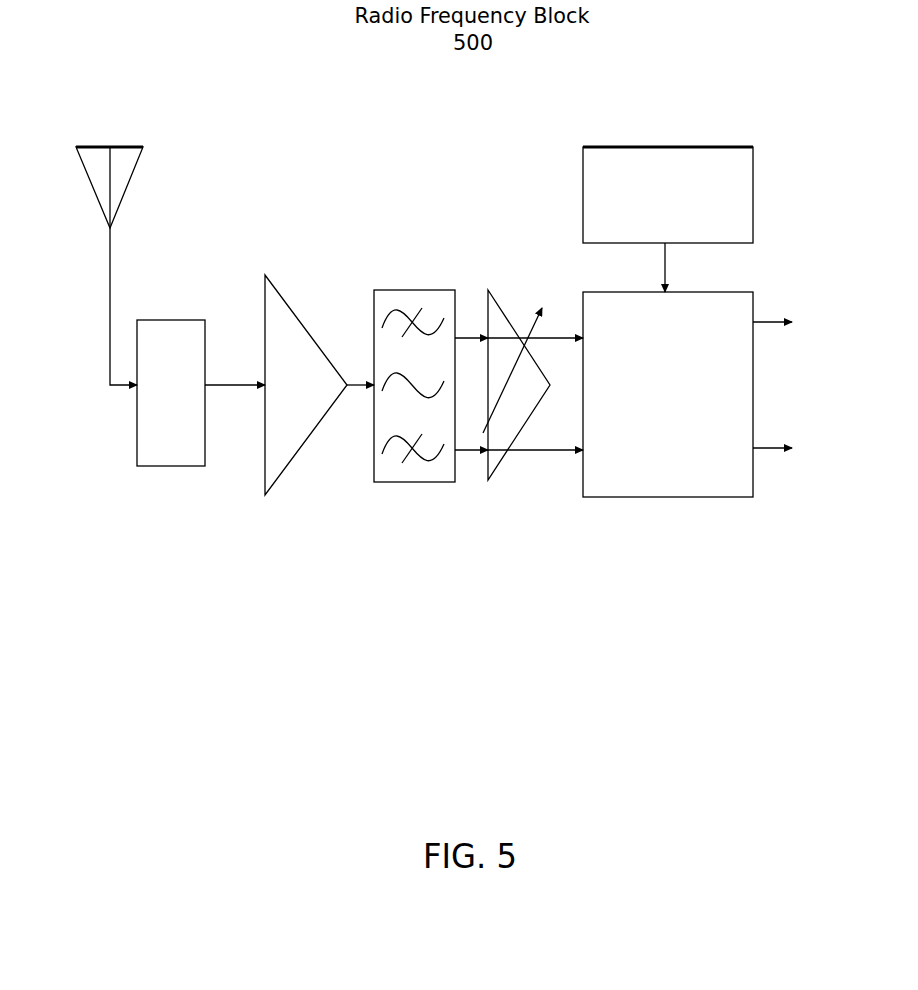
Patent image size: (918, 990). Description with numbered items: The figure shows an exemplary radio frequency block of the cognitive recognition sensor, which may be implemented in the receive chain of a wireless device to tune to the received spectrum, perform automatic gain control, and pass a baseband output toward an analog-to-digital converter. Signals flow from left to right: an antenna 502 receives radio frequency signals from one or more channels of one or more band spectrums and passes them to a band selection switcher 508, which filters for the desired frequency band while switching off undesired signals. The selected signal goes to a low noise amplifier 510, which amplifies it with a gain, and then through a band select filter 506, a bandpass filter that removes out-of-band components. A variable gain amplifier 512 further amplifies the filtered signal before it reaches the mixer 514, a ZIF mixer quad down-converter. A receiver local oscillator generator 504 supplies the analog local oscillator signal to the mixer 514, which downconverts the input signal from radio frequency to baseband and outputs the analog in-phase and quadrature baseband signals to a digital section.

The antenna 502 is at (121, 147).
The receiver local oscillator generator 504 is at (713, 147).
The band select filter 506 is at (412, 290).
The band selection switcher 508 is at (137, 443).
The low noise amplifier 510 is at (286, 467).
The variable gain amplifier 512 is at (497, 466).
The mixer 514 is at (657, 497).